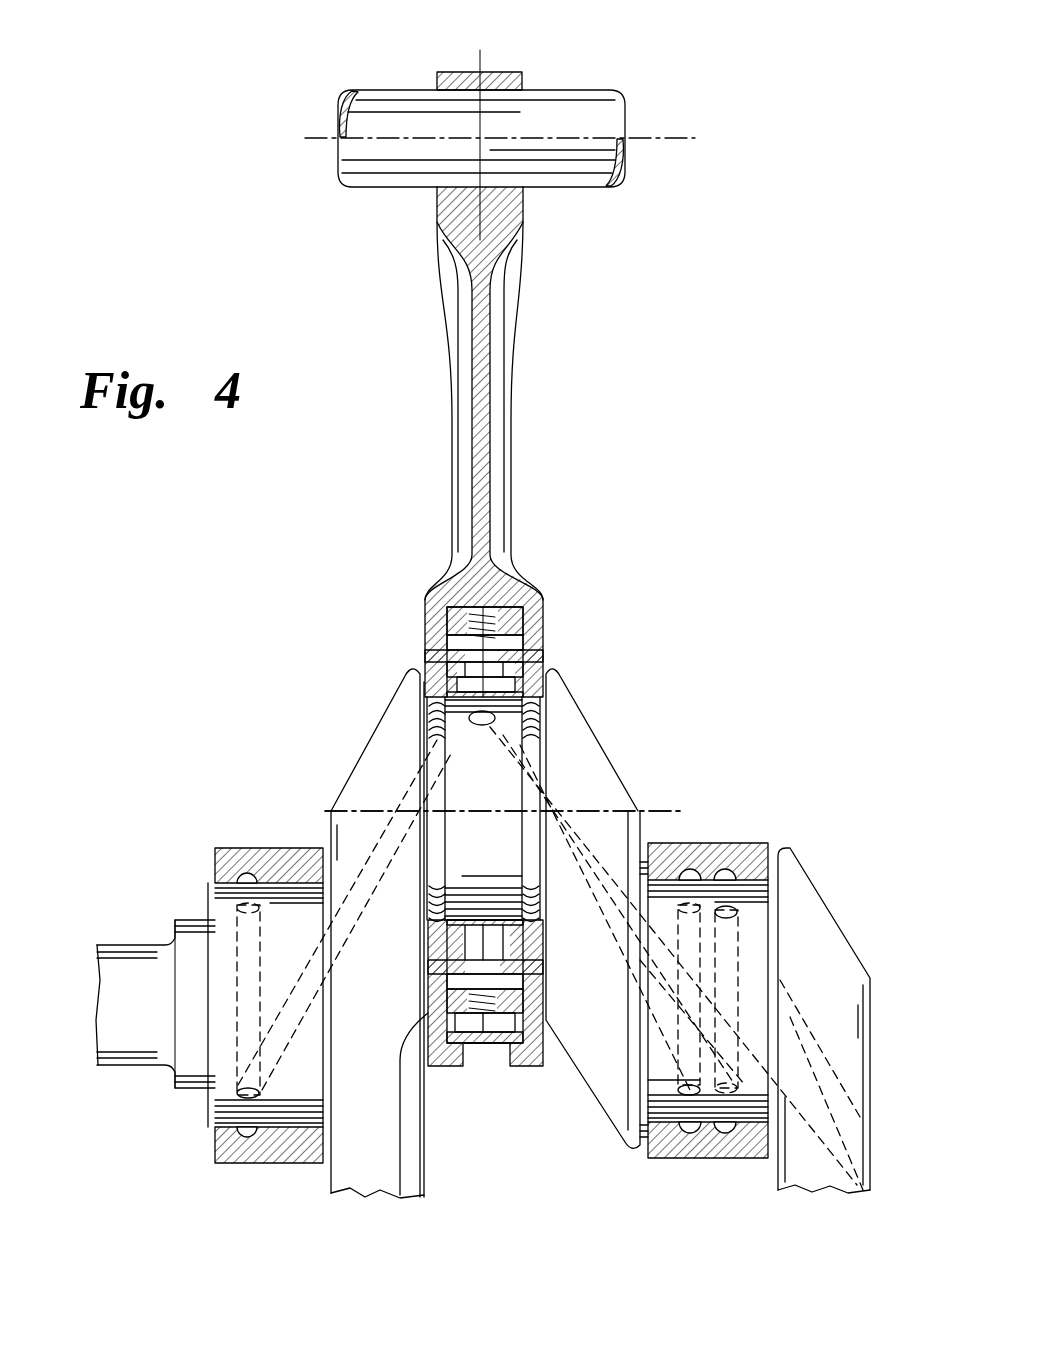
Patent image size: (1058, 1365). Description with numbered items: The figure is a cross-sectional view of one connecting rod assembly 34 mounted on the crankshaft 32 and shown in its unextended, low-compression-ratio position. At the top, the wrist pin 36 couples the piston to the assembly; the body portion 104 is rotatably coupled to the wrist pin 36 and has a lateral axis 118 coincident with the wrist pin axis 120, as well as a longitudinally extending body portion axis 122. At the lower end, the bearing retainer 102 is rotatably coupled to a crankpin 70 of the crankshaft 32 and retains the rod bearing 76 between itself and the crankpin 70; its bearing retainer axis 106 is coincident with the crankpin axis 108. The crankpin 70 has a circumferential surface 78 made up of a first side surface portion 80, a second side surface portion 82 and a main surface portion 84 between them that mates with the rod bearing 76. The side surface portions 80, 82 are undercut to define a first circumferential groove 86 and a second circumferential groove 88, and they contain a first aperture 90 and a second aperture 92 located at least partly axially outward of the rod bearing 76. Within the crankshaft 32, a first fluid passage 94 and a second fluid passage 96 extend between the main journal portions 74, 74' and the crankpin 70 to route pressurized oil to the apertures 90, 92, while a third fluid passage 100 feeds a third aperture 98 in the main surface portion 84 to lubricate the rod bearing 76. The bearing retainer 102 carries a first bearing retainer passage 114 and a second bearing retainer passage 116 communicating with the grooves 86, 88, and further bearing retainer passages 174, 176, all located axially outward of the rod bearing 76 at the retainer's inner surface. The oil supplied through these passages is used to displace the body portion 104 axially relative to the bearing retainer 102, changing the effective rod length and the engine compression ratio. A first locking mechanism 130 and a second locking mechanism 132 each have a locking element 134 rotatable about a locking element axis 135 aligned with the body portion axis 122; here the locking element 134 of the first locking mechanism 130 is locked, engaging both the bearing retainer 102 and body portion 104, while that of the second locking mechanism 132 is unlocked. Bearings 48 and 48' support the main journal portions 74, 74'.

The wrist pin 36 is at (565, 90).
The lateral axis 118 is at (657, 138).
The wrist pin axis 120 is at (657, 138).
The connecting rod assembly 34 is at (483, 661).
The body portion axis 122 is at (512, 232).
The body portion 104 is at (511, 378).
The second locking mechanism 132 is at (482, 625).
The locking element 134 is at (540, 600).
The locking element axis 135 is at (550, 592).
The second bearing retainer passage 116 is at (553, 650).
The bearing retainer 102 is at (553, 662).
The second circumferential groove 88 is at (558, 676).
The second aperture 92 is at (548, 712).
The rod bearing 76 is at (424, 662).
The first bearing retainer passage 114 is at (420, 672).
The first circumferential groove 86 is at (440, 705).
The first aperture 90 is at (432, 724).
The crankpin 70 is at (440, 760).
The third aperture 98 is at (472, 728).
The first locking mechanism 130 is at (520, 1066).
The first side surface portion 80 is at (445, 948).
The bearing retainer passage 174 is at (428, 990).
The circumferential surface 78 is at (430, 1000).
The second side surface portion 82 is at (528, 948).
The bearing retainer passage 176 is at (543, 990).
The main surface portion 84 is at (543, 1000).
The bearing retainer axis 106 is at (690, 808).
The crankpin axis 108 is at (690, 808).
The main journal portion 74 is at (289, 933).
The first fluid passage 94 is at (410, 792).
The second fluid passage 96 is at (560, 762).
The third fluid passage 100 is at (548, 740).
The main bearing 48 is at (248, 967).
The crankshaft 32 is at (208, 900).
The main bearing 48' is at (727, 971).
The main journal portion 74' is at (822, 1001).